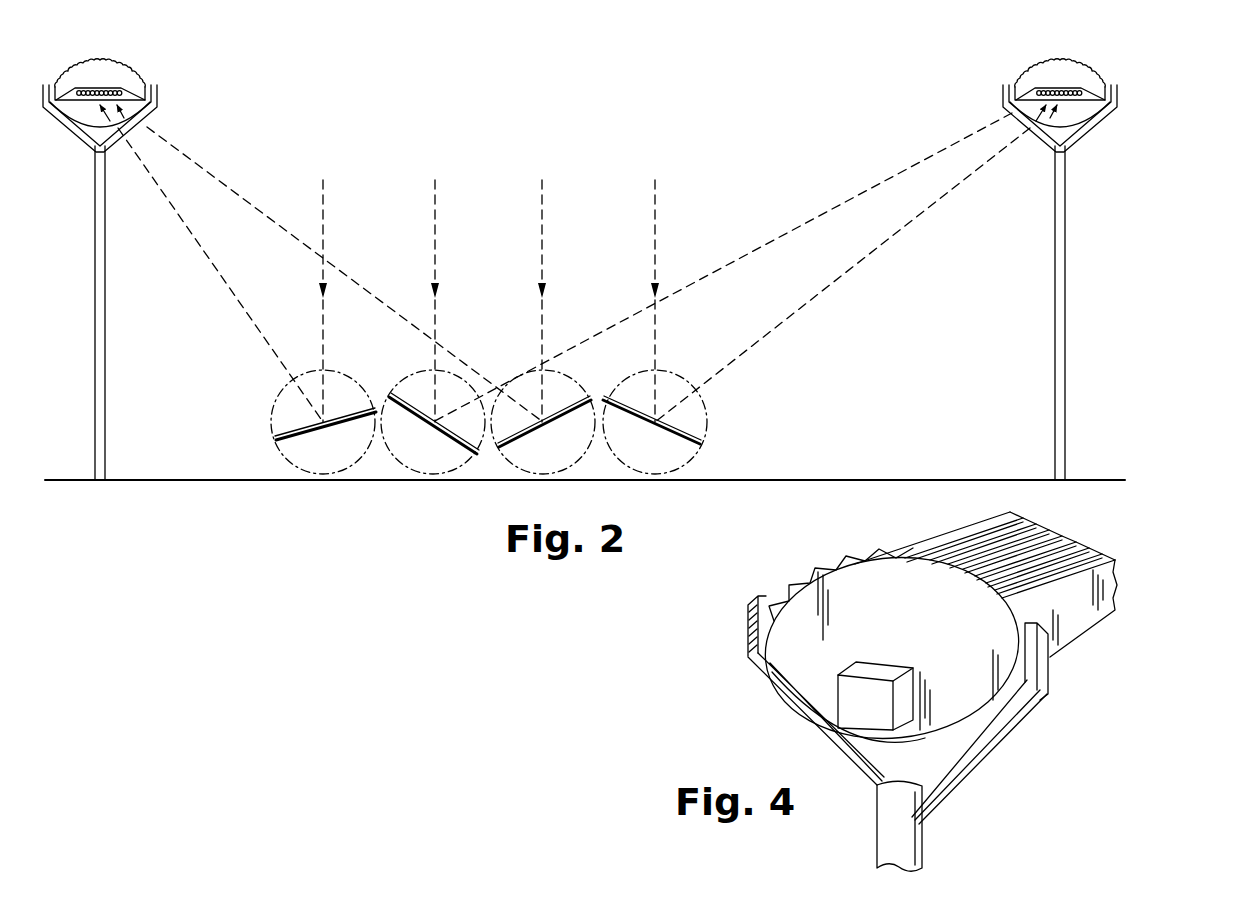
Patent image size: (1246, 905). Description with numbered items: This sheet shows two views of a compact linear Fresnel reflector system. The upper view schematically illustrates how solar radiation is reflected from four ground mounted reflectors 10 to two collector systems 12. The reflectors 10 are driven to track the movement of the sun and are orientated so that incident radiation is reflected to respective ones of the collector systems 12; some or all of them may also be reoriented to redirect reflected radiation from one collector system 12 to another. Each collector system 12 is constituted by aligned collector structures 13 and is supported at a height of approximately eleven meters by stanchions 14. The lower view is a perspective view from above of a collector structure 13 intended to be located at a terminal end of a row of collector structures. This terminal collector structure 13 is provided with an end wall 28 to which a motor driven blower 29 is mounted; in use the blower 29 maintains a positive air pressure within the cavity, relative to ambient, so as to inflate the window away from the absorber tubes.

In FIG. 2, the reflector 10 is at (413, 415).
In FIG. 2, the collector system 12 is at (123, 77).
In FIG. 4, the collector system 12 is at (1035, 580).
In FIG. 2, the collector structure 13 is at (177, 119).
In FIG. 4, the collector structure 13 is at (680, 680).
In FIG. 2, the stanchion 14 is at (103, 298).
In FIG. 4, the end wall 28 is at (963, 690).
In FIG. 4, the motor driven blower 29 is at (867, 668).